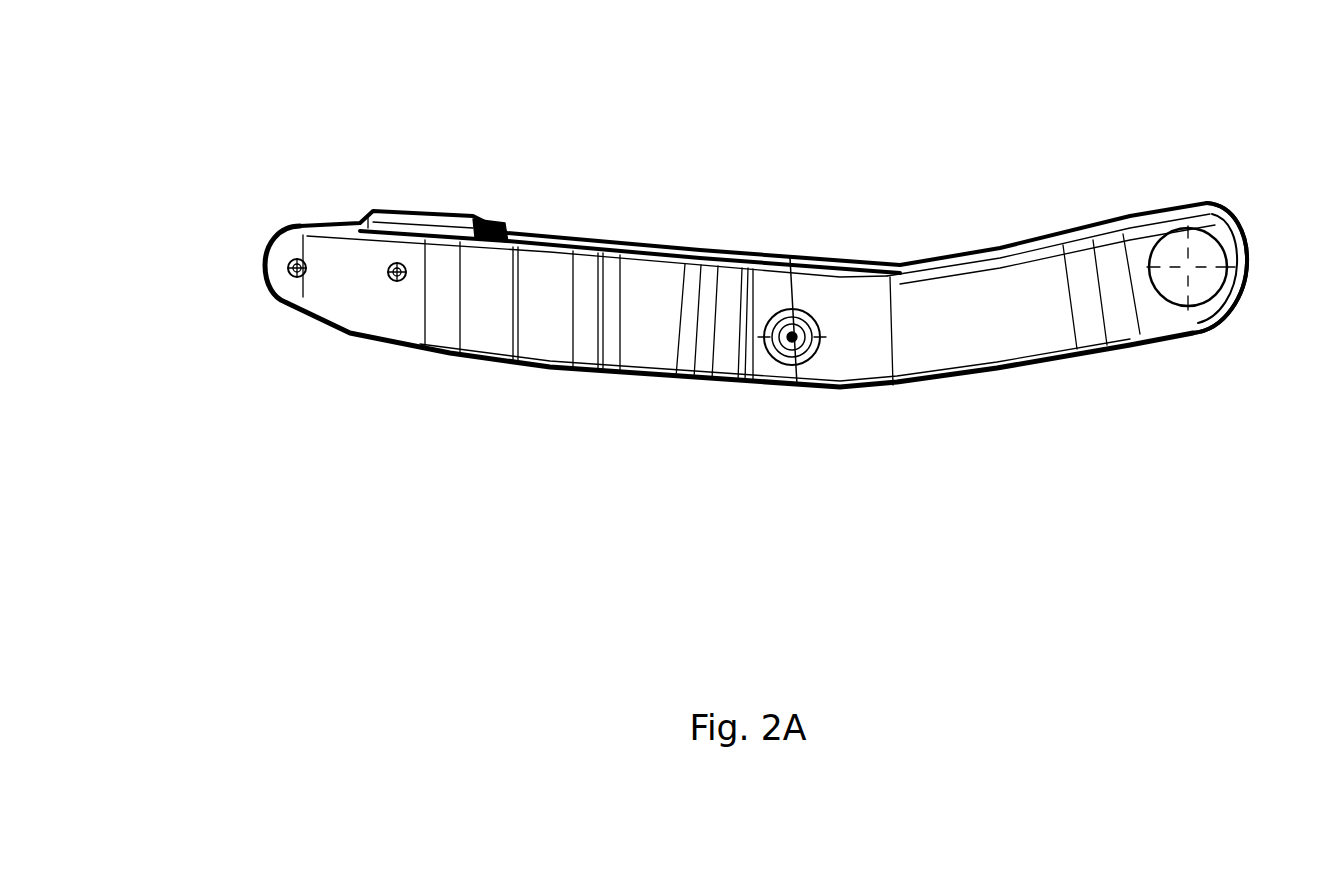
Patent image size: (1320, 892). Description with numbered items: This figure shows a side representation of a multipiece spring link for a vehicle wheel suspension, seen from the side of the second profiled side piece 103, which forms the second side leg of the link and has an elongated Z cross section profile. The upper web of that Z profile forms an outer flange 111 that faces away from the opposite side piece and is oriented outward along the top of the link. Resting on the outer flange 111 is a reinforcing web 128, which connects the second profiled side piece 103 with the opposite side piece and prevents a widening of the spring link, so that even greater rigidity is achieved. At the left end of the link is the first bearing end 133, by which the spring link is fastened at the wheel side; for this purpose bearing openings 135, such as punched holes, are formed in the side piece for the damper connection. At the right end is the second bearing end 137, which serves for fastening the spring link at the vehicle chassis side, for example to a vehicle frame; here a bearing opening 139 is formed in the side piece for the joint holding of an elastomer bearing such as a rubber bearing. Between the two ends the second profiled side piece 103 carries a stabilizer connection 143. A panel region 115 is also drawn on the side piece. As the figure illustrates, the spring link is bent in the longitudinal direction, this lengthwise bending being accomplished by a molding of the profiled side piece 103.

The second profiled side piece 103 is at (1005, 340).
The outer flange 111 is at (402, 212).
The panel section 115 is at (928, 332).
The reinforcing web 128 is at (489, 217).
The first bearing end 133 is at (272, 222).
The bearing openings 135 is at (294, 278).
The second bearing end 137 is at (1242, 209).
The bearing openings 139 is at (1195, 277).
The stabilizer connection 143 is at (790, 258).